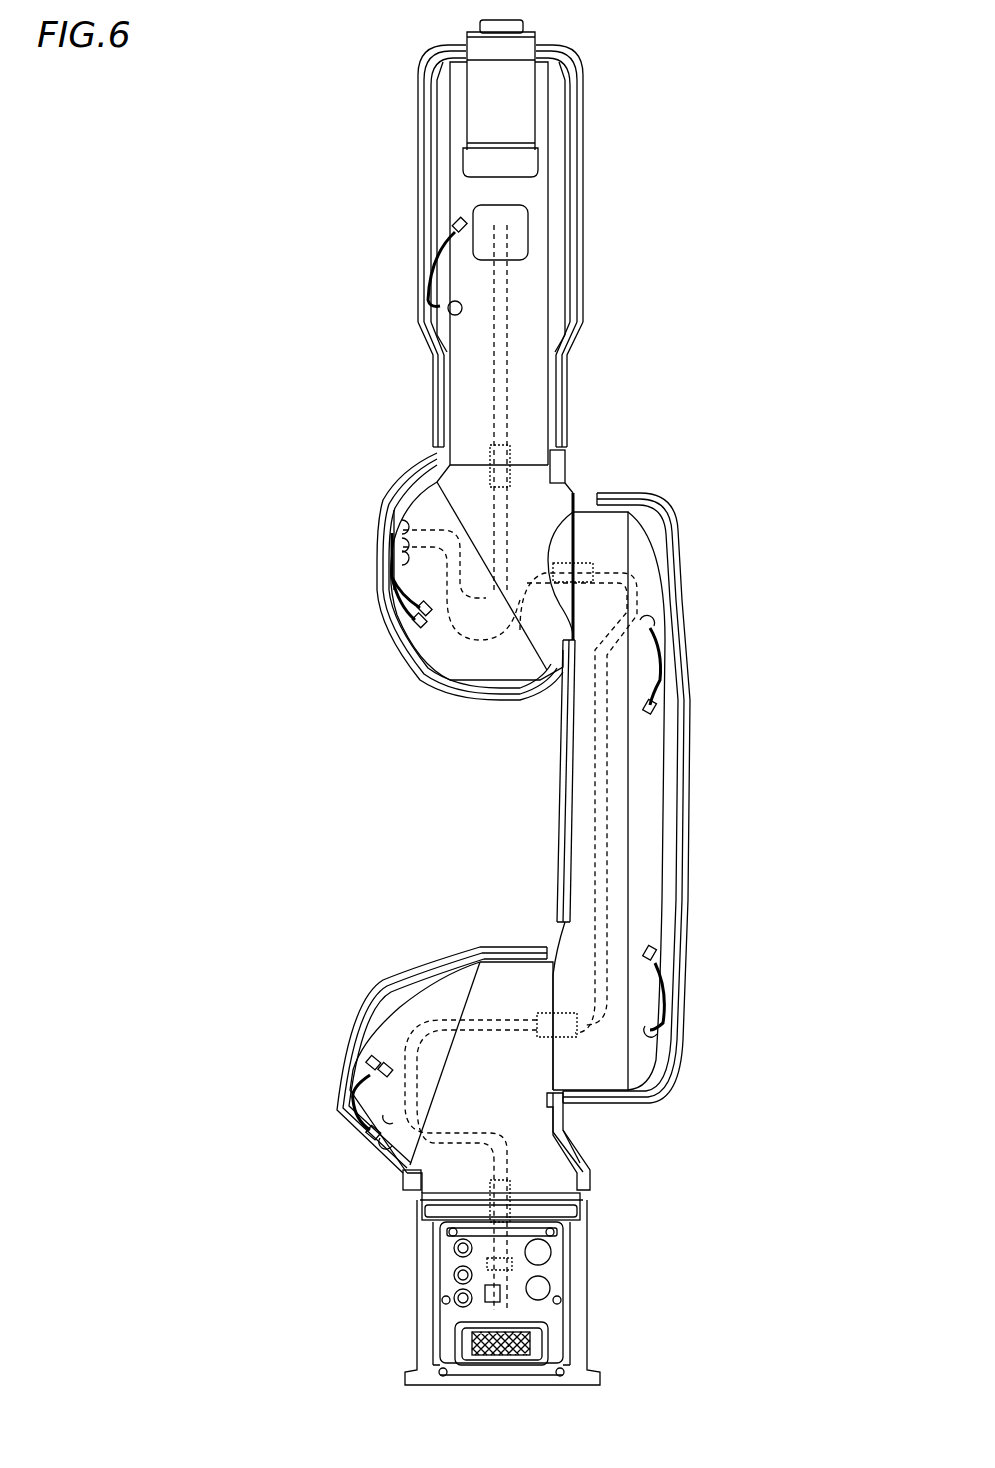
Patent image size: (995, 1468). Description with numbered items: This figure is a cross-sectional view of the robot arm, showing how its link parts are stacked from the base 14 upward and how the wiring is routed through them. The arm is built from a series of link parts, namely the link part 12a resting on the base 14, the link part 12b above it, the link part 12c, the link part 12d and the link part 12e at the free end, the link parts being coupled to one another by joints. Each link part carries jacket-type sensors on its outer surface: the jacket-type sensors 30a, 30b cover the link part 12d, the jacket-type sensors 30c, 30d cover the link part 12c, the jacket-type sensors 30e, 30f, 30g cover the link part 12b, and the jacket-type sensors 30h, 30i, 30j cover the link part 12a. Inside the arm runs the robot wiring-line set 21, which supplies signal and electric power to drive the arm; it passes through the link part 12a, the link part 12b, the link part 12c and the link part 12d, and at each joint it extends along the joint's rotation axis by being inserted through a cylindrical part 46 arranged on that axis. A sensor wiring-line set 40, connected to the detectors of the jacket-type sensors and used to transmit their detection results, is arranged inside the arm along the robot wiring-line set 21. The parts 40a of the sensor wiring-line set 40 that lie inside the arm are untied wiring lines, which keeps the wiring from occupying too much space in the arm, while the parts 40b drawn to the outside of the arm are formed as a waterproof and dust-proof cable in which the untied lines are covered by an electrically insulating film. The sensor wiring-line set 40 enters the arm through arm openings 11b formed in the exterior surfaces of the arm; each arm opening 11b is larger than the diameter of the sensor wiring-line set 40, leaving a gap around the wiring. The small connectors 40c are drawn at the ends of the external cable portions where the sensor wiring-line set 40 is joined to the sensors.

The link part 12a is at (452, 1175).
The link part 12b is at (655, 762).
The link part 12c is at (440, 652).
The link part 12d is at (525, 387).
The link part 12e is at (520, 103).
The base 14 is at (588, 1300).
The robot wiring-line set 21 is at (512, 287).
The jacket-type sensor 30a is at (418, 195).
The jacket-type sensor 30b is at (583, 195).
The jacket-type sensor 30c is at (400, 576).
The jacket-type sensor 30d is at (378, 535).
The jacket-type sensor 30e is at (675, 640).
The jacket-type sensor 30f is at (690, 884).
The jacket-type sensor 30g is at (563, 795).
The jacket-type sensor 30h is at (585, 1148).
The jacket-type sensor 30i is at (415, 1068).
The jacket-type sensor 30j is at (380, 1000).
The sensor wiring-line set 40 is at (510, 422).
The parts of the sensor wiring-line set 40a is at (452, 312).
The parts of the sensor wiring-line set 40b is at (432, 250).
The connector 40c is at (455, 222).
The cylindrical part 46 is at (512, 478).
The arm opening 11b is at (400, 520).